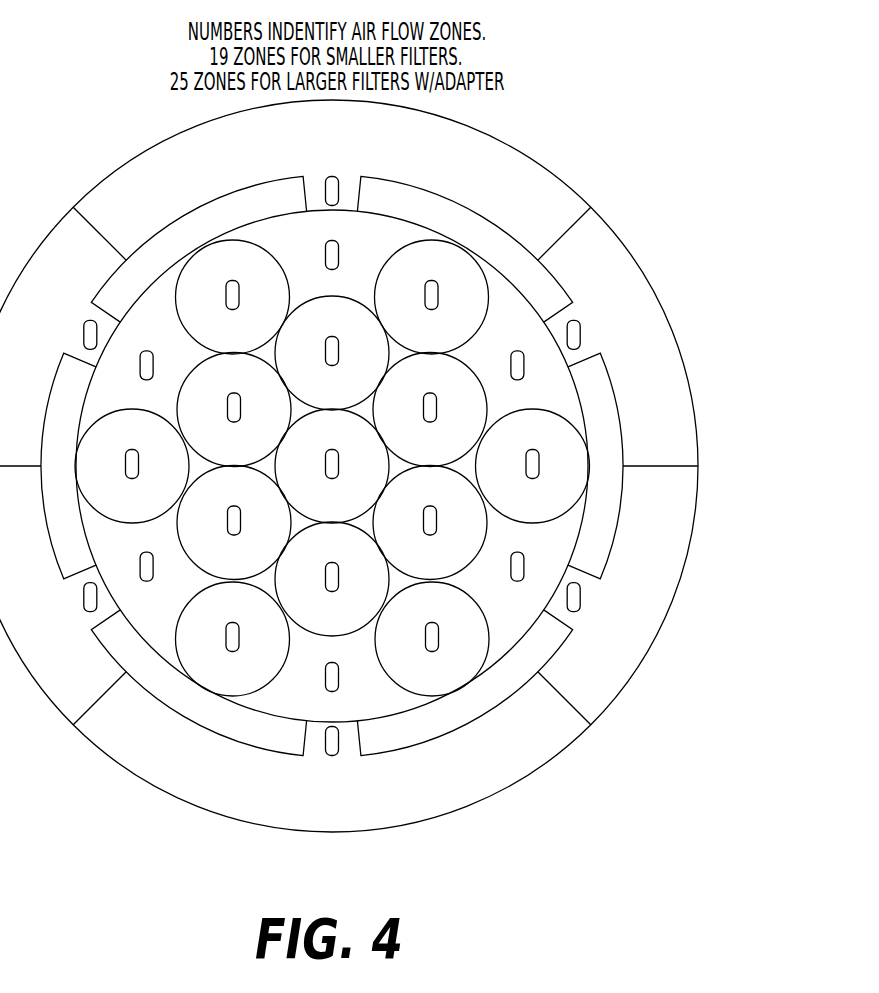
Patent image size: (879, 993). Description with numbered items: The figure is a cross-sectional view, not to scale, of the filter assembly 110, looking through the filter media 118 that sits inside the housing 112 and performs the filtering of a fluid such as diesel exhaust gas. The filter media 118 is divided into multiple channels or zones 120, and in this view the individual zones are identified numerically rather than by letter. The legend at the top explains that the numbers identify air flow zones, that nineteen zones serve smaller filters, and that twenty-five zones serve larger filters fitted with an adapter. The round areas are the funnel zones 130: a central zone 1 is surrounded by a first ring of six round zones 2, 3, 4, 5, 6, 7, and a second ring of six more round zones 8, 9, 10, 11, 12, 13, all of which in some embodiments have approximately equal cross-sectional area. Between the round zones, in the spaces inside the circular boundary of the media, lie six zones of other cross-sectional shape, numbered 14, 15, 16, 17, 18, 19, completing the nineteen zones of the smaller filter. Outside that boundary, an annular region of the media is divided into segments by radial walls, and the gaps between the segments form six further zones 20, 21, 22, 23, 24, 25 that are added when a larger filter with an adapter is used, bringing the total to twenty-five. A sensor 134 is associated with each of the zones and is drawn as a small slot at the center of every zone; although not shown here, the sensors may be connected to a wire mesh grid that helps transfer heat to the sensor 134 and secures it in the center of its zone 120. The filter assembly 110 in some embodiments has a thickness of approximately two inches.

The filter assembly 110 is at (578, 66).
The housing 112 is at (683, 358).
The filter media 118 is at (645, 258).
The zones 120 is at (626, 213).
The funnel zones 130 is at (332, 516).
The sensor 134 is at (338, 471).
The zone 1 is at (332, 466).
The zone 2 is at (430, 410).
The zone 3 is at (430, 523).
The zone 4 is at (332, 579).
The zone 5 is at (234, 523).
The zone 6 is at (234, 410).
The zone 7 is at (332, 353).
The zone 8 is at (432, 297).
The zone 9 is at (533, 466).
The zone 10 is at (432, 639).
The zone 11 is at (233, 639).
The zone 12 is at (132, 466).
The zone 13 is at (233, 297).
The zone 14 is at (332, 243).
The zone 15 is at (519, 379).
The zone 16 is at (518, 581).
The zone 17 is at (332, 692).
The zone 18 is at (145, 581).
The zone 19 is at (145, 377).
The zone 20 is at (332, 177).
The zone 21 is at (587, 334).
The zone 22 is at (587, 598).
The zone 23 is at (331, 760).
The zone 24 is at (79, 600).
The zone 25 is at (79, 330).